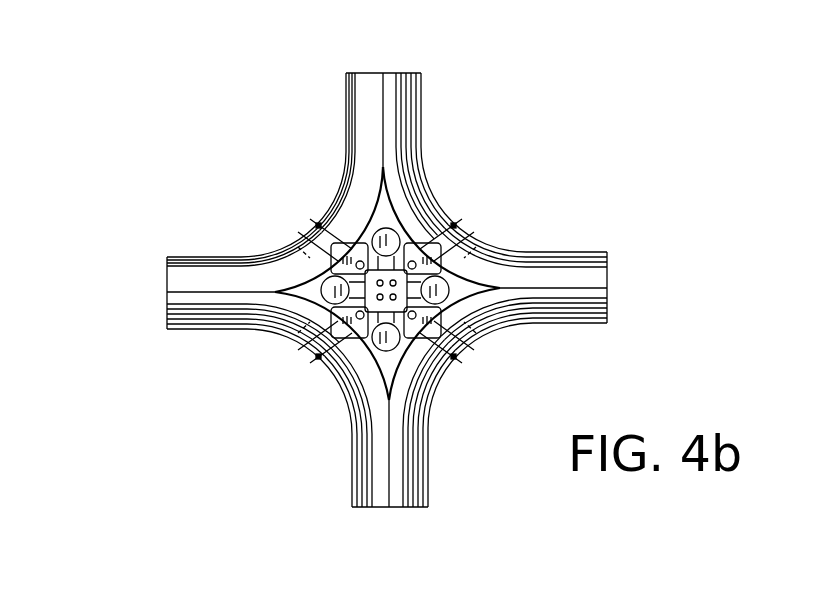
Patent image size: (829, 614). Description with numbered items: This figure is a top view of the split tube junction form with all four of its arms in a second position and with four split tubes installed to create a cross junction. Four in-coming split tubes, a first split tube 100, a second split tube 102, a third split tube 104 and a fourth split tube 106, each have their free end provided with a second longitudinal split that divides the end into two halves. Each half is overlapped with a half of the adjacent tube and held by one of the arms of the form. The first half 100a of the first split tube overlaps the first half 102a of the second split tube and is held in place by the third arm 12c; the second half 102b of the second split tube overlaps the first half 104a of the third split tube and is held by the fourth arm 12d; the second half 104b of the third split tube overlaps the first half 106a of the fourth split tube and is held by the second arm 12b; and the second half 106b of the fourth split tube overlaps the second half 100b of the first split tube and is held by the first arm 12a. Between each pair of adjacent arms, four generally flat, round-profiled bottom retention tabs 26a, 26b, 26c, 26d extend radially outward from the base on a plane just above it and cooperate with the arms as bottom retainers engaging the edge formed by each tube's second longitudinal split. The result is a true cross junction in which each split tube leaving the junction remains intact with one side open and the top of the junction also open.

The first split tube 100 is at (370, 88).
The first half of first split tube 100a is at (420, 158).
The second half of first split tube 100b is at (357, 188).
The second split tube 102 is at (610, 272).
The first half of second split tube 102a is at (480, 262).
The second half of second split tube 102b is at (493, 318).
The third split tube 104 is at (375, 497).
The first half of third split tube 104a is at (435, 390).
The second half of third split tube 104b is at (352, 415).
The fourth split tube 106 is at (185, 318).
The first half of fourth split tube 106a is at (273, 332).
The second half of fourth split tube 106b is at (263, 257).
The first arm 12a is at (322, 222).
The second arm 12b is at (325, 355).
The third arm 12c is at (458, 222).
The fourth arm 12d is at (455, 358).
The bottom retention tab 26a is at (267, 268).
The bottom retention tab 26b is at (373, 362).
The bottom retention tab 26c is at (408, 180).
The bottom retention tab 26d is at (470, 330).